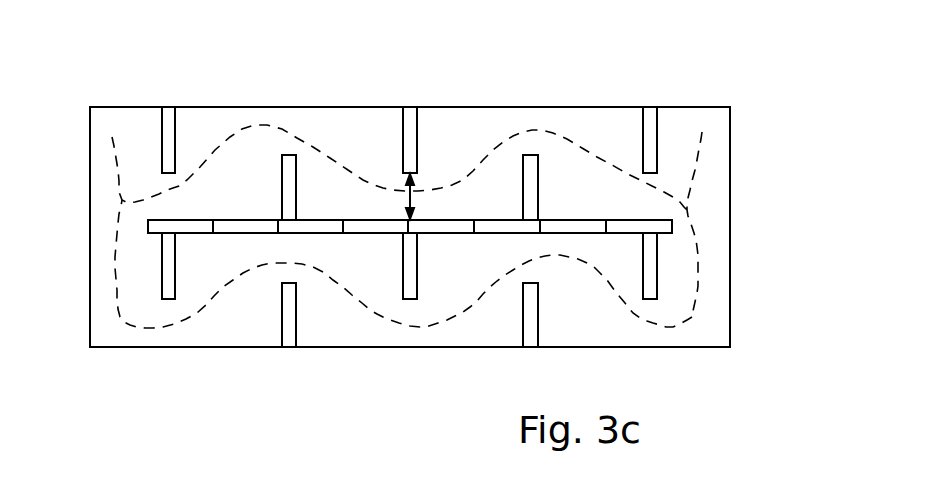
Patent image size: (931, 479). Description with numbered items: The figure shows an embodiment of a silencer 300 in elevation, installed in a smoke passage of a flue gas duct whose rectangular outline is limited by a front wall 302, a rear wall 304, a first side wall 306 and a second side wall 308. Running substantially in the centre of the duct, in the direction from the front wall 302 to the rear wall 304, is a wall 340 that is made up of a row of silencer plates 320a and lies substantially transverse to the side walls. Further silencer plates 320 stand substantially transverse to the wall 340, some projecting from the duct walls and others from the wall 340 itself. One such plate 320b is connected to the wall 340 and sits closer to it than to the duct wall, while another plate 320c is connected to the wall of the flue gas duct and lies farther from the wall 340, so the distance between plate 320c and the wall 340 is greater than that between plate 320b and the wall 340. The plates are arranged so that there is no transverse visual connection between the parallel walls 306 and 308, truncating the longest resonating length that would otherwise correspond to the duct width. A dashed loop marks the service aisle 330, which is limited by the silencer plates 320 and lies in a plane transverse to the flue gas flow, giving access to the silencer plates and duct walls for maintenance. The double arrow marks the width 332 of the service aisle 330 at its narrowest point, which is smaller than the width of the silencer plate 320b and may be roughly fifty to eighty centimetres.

The heat exchanger / cooling device 300 is at (347, 320).
The front wall 302 is at (373, 358).
The rear wall 304 is at (385, 95).
The first side wall 306 is at (82, 202).
The second side wall 308 is at (743, 237).
The silencer plates 320 is at (232, 225).
The silencer plates forming the wall 320a is at (548, 230).
The silencer plate connected to the wall 320b is at (290, 177).
The silencer plate connected to the duct wall 320c is at (528, 313).
The service aisle 330 is at (552, 133).
The width of the service aisle 332 is at (412, 197).
The wall 340 is at (606, 226).